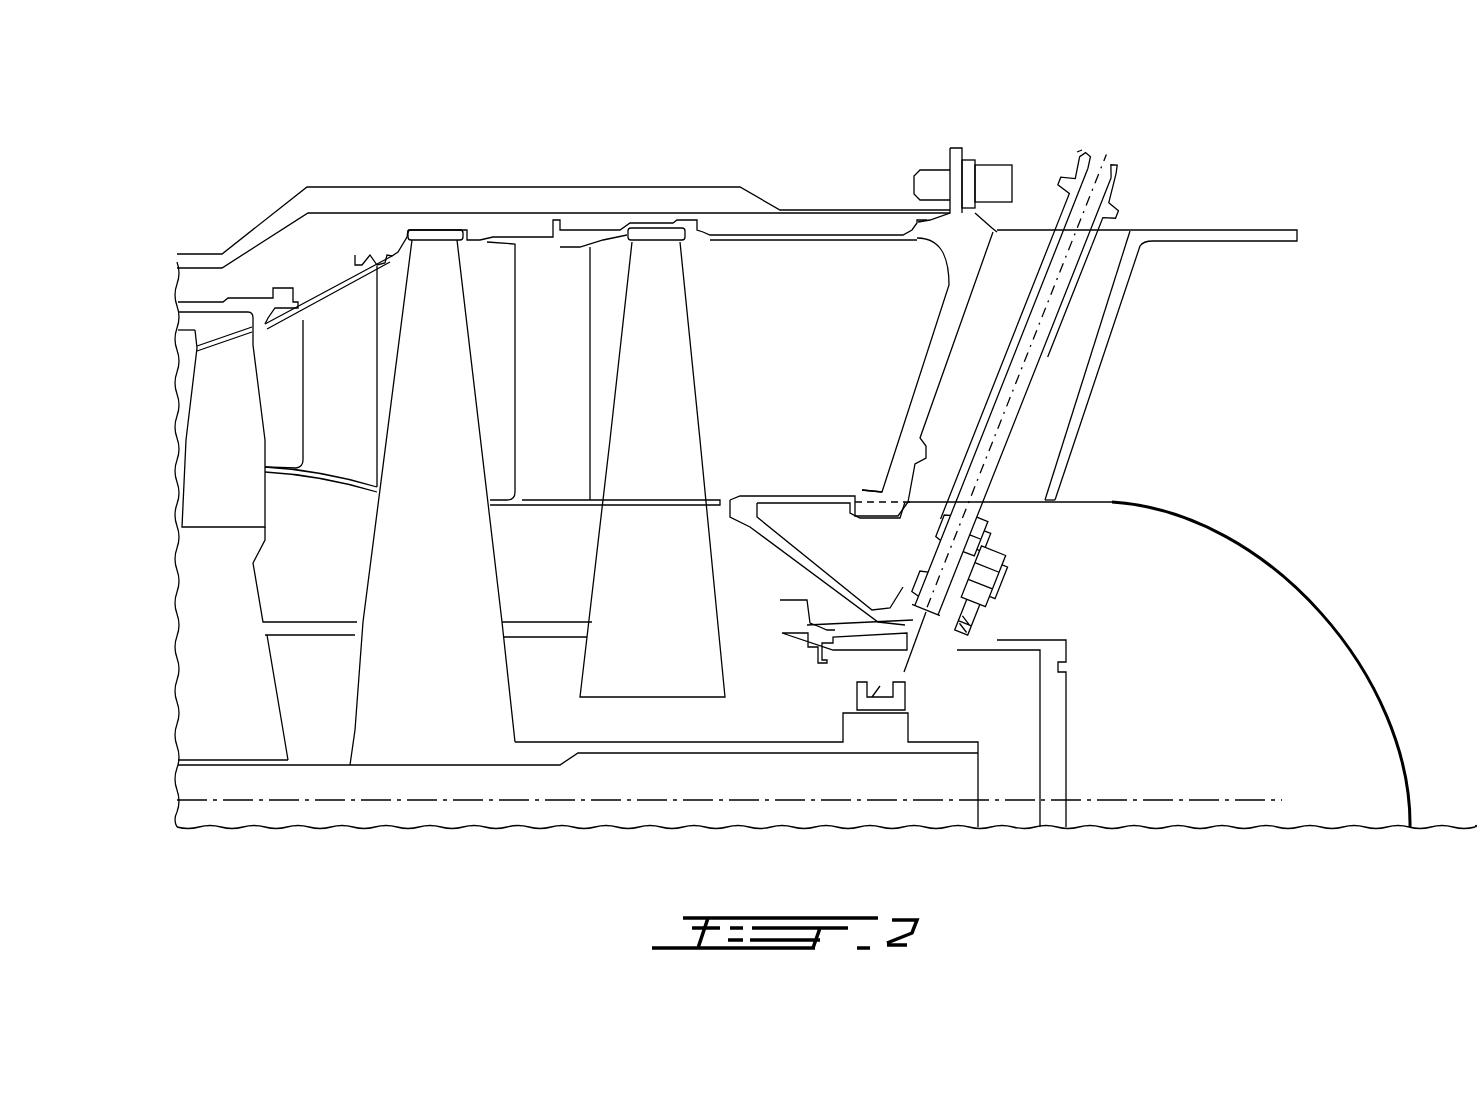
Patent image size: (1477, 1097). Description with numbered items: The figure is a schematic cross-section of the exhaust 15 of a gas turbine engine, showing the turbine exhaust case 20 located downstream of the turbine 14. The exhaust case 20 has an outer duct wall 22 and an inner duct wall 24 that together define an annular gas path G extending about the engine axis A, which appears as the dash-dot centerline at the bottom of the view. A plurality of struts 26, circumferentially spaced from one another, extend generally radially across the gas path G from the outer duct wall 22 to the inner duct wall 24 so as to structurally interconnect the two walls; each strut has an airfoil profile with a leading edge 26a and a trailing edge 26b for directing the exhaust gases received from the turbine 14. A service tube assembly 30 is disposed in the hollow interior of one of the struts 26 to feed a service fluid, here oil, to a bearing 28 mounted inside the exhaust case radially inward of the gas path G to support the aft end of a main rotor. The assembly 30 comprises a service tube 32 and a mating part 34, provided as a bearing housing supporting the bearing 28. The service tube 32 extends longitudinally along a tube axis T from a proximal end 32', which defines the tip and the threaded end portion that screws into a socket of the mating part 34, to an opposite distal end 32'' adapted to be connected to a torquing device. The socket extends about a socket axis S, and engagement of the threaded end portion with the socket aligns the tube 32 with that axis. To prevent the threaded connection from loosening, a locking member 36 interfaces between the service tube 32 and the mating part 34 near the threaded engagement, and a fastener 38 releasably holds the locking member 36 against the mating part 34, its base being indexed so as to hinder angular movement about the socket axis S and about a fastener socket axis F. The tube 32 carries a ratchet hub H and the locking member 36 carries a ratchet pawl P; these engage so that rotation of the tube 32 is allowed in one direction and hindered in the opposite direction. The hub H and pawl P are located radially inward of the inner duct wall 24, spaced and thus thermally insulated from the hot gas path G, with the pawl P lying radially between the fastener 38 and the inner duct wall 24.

The turbine 14 is at (381, 170).
The exhaust 15 is at (1380, 266).
The turbine exhaust case 20 is at (1235, 226).
The outer duct wall 22 is at (1280, 243).
The inner duct wall 24 is at (1113, 502).
The struts 26 is at (1152, 398).
The leading edge 26a is at (937, 327).
The trailing edge 26b is at (1118, 345).
The bearing 28 is at (921, 697).
The service tube assembly 30 is at (1028, 166).
The service tube 32 is at (1032, 382).
The proximal end 32' is at (944, 661).
The distal end 32'' is at (1138, 115).
The mating part 34 is at (1000, 640).
The locking member 36 is at (1018, 556).
The fastener 38 is at (1008, 580).
The engine axis A is at (207, 797).
The annular gas path G is at (812, 397).
The ratchet hub H is at (985, 525).
The ratchet pawl P is at (980, 548).
The fastener socket axis F is at (962, 658).
The socket axis S is at (905, 652).
The tube axis T is at (1100, 153).